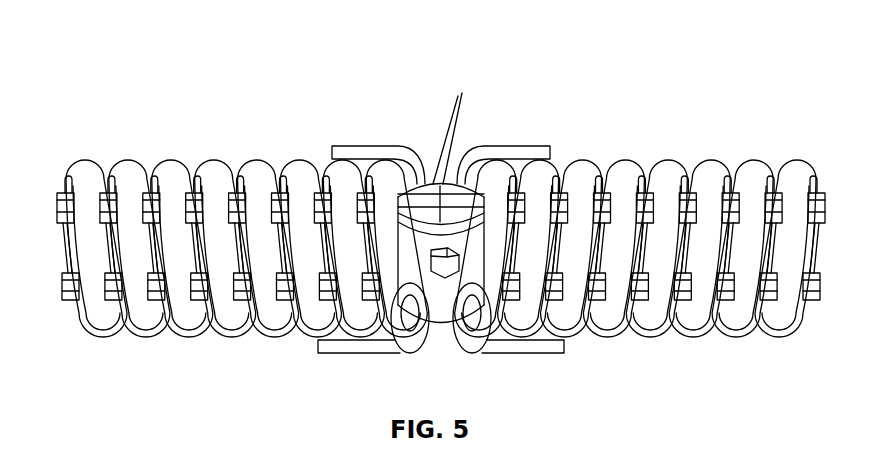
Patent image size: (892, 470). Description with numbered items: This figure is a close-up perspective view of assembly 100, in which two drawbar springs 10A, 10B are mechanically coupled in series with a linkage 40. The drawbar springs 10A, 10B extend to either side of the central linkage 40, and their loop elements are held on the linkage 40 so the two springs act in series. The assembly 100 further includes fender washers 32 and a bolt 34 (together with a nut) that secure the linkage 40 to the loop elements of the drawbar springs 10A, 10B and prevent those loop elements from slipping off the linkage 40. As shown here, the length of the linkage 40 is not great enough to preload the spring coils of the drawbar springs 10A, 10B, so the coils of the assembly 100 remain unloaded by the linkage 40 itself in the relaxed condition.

The assembly 100 is at (92, 62).
The drawbar spring 10A is at (156, 140).
The drawbar spring 10B is at (742, 150).
The fender washers 32 is at (445, 162).
The bolt 34 is at (445, 268).
The linkage 40 is at (517, 264).